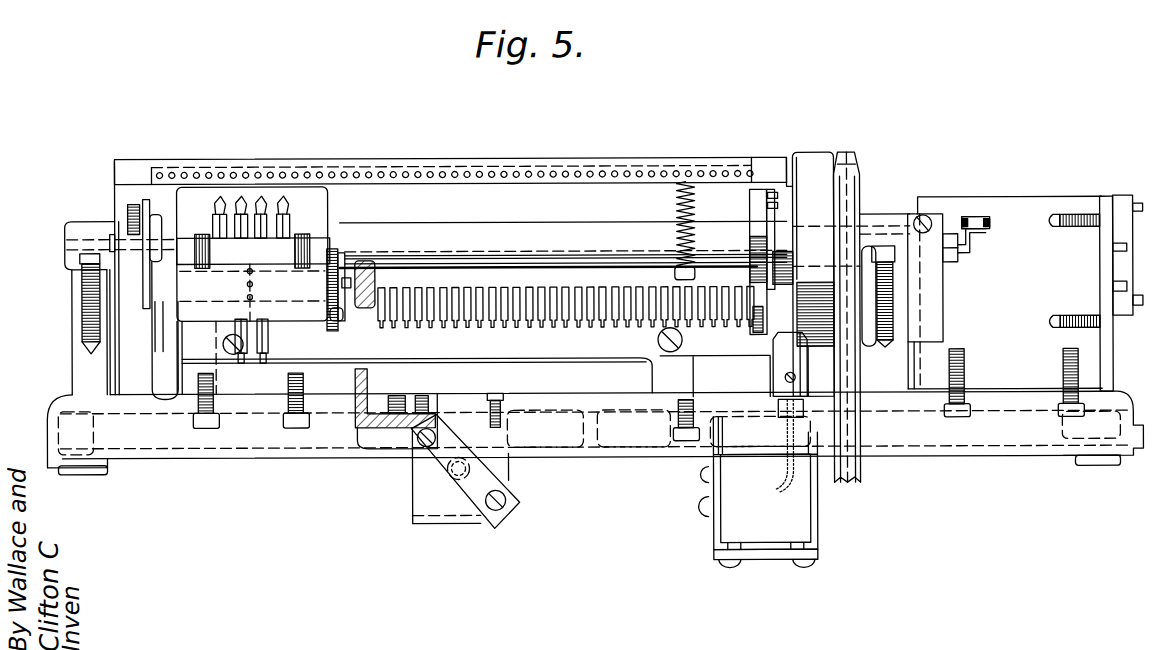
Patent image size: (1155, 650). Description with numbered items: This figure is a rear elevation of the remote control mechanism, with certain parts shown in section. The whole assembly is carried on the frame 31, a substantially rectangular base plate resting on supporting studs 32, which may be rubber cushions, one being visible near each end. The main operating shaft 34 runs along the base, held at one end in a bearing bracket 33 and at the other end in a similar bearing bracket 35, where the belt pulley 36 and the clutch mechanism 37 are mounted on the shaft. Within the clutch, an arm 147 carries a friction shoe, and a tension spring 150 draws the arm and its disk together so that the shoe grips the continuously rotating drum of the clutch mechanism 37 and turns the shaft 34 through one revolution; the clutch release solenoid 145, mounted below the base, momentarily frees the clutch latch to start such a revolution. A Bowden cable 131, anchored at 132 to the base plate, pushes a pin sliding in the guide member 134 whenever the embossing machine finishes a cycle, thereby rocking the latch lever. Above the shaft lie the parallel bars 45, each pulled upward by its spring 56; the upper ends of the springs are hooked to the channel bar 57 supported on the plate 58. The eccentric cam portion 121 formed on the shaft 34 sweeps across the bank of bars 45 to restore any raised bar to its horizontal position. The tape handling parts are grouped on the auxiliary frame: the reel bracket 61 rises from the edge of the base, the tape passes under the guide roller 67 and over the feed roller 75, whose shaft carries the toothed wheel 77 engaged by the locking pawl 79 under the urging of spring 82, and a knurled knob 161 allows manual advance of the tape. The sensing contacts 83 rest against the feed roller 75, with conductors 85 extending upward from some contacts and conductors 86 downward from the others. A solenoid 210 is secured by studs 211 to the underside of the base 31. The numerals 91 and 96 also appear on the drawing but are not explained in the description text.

The frame 31 is at (1027, 458).
The supporting studs 32 is at (108, 472).
The bearing bracket 33 is at (72, 285).
The main operating shaft 34 is at (65, 247).
The bearing bracket 35 is at (945, 292).
The belt pulley 36 is at (850, 155).
The clutch mechanism 37 is at (812, 155).
The bars 45 is at (557, 326).
The spring 56 is at (692, 200).
The channel bar 57 is at (387, 160).
The plate 58 is at (482, 160).
The reel bracket 61 is at (366, 390).
The guide roller 67 is at (253, 251).
The feed roller 75 is at (415, 290).
The toothed wheel 77 is at (342, 252).
The locking pawl 79 is at (338, 322).
The spring 82 is at (330, 322).
The sensing contacts 83 is at (215, 225).
The conductors 85 is at (264, 197).
The conductors 86 is at (262, 362).
The housing 91 is at (1052, 199).
The pulley support 96 is at (128, 218).
The eccentric cam portion 121 is at (568, 231).
The Bowden cable 131 is at (786, 472).
The anchor 132 is at (812, 415).
The guide member 134 is at (775, 366).
The clutch release solenoid 145 is at (818, 520).
The arm 147 is at (766, 196).
The tension spring 150 is at (766, 207).
The knurled knob 161 is at (370, 260).
The solenoid 210 is at (510, 478).
The studs 211 is at (424, 395).